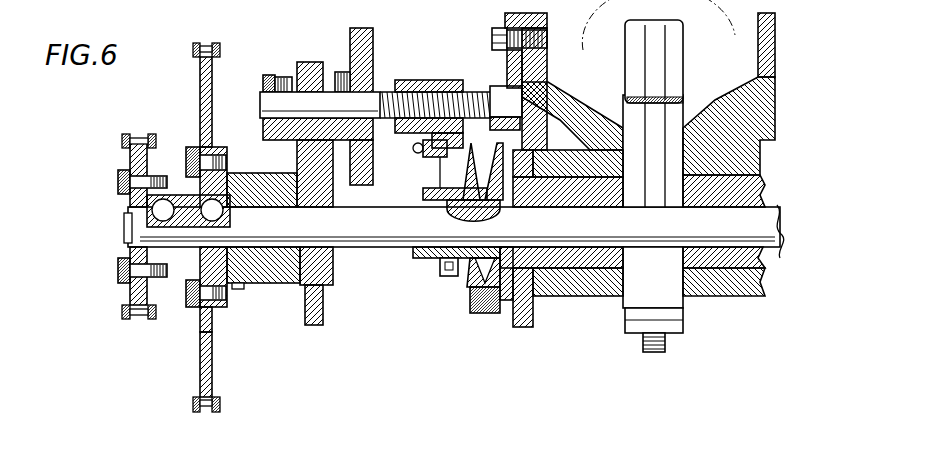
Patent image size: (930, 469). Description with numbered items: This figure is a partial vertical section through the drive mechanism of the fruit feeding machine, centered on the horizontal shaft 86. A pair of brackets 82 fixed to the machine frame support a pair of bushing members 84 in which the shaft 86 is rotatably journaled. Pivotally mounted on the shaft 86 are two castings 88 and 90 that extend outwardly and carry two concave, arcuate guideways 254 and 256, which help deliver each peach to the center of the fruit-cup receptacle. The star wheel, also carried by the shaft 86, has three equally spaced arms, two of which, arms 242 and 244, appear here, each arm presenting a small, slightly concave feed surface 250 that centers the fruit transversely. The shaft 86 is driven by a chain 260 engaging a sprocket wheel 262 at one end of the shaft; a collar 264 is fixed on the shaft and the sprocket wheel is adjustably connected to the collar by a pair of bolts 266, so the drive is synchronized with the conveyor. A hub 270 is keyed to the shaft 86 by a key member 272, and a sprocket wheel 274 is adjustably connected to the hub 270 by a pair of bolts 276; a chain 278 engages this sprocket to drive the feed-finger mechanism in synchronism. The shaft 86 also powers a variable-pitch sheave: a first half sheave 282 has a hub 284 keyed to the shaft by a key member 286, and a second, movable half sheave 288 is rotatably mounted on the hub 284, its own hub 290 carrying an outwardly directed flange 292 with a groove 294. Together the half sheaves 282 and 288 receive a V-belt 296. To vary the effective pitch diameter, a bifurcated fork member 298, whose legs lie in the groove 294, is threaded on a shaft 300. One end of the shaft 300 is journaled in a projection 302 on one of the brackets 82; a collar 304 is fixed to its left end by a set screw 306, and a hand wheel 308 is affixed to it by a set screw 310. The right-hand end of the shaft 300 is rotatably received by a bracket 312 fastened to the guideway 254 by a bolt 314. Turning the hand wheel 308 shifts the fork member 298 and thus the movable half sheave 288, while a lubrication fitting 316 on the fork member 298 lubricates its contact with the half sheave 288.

The bracket 82 is at (226, 187).
The bushing member 84 is at (333, 255).
The shaft 86 is at (361, 230).
The casting 88 is at (533, 303).
The casting 90 is at (723, 262).
The arm 242 is at (653, 350).
The arm 244 is at (623, 110).
The feed surface 250 is at (678, 53).
The guideway 254 is at (548, 22).
The guideway 256 is at (758, 40).
The chain 260 is at (122, 140).
The sprocket wheel 262 is at (130, 160).
The collar 264 is at (174, 262).
The bolt 266 is at (118, 183).
The hub 270 is at (238, 283).
The key member 272 is at (190, 192).
The sprocket wheel 274 is at (213, 367).
The bolt 276 is at (197, 310).
The chain 278 is at (220, 406).
The first half sheave 282 is at (500, 300).
The hub 284 is at (423, 194).
The key member 286 is at (455, 212).
The second half sheave 288 is at (465, 277).
The hub 290 is at (447, 258).
The flange 292 is at (449, 270).
The groove 294 is at (470, 285).
The V-belt 296 is at (487, 313).
The fork member 298 is at (467, 133).
The shaft 300 is at (420, 80).
The projection 302 is at (308, 62).
The collar 304 is at (273, 140).
The set screw 306 is at (278, 75).
The hand wheel 308 is at (400, 30).
The set screw 310 is at (341, 72).
The bracket 312 is at (500, 86).
The bolt 314 is at (492, 38).
The lubrication fitting 316 is at (416, 152).